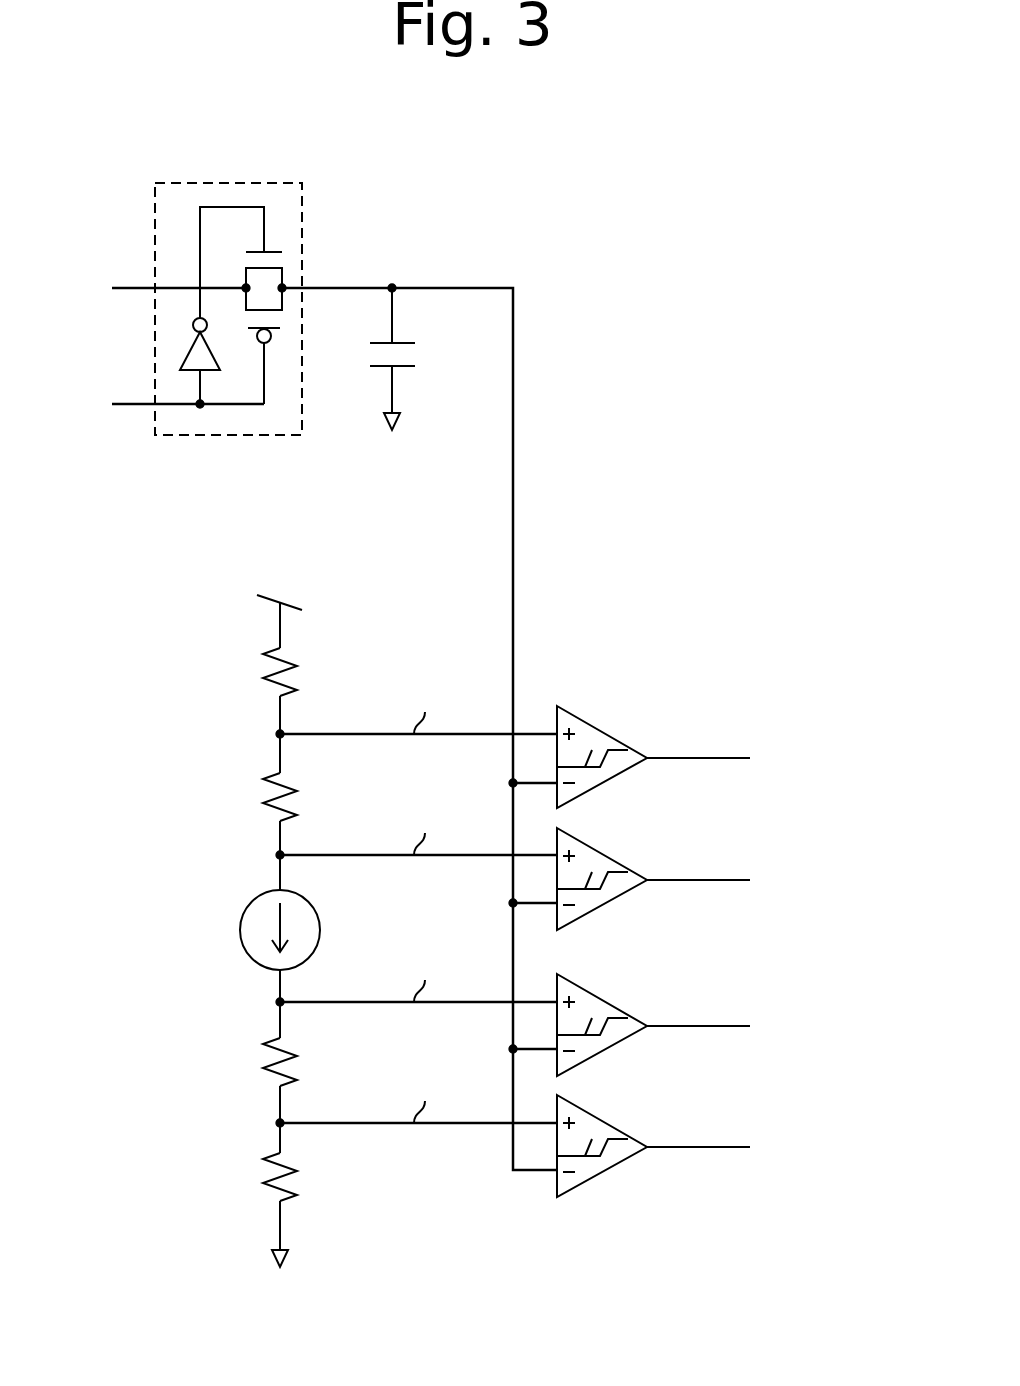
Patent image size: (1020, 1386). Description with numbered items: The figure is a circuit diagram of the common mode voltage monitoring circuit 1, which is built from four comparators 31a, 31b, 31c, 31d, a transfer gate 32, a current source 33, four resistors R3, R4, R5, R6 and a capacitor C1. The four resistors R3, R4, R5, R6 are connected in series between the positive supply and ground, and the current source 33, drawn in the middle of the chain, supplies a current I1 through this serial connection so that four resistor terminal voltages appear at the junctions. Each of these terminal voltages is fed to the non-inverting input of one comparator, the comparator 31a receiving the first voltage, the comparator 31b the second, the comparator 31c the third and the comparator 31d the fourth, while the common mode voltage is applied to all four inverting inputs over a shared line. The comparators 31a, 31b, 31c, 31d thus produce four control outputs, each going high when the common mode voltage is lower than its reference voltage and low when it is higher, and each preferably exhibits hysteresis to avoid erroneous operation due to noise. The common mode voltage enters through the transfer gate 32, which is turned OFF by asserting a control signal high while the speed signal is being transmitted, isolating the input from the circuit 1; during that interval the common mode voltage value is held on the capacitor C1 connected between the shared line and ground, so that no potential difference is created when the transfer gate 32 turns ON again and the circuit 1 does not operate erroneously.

The common mode voltage monitoring circuit 1 is at (818, 230).
The transfer gate 32 is at (302, 225).
The current source 33 is at (275, 935).
The comparator 31a is at (605, 735).
The comparator 31b is at (605, 857).
The comparator 31c is at (605, 1003).
The comparator 31d is at (605, 1124).
The capacitor C1 is at (400, 343).
The current I1 is at (318, 912).
The resistor R3 is at (298, 672).
The resistor R4 is at (298, 797).
The resistor R5 is at (298, 1062).
The resistor R6 is at (298, 1177).